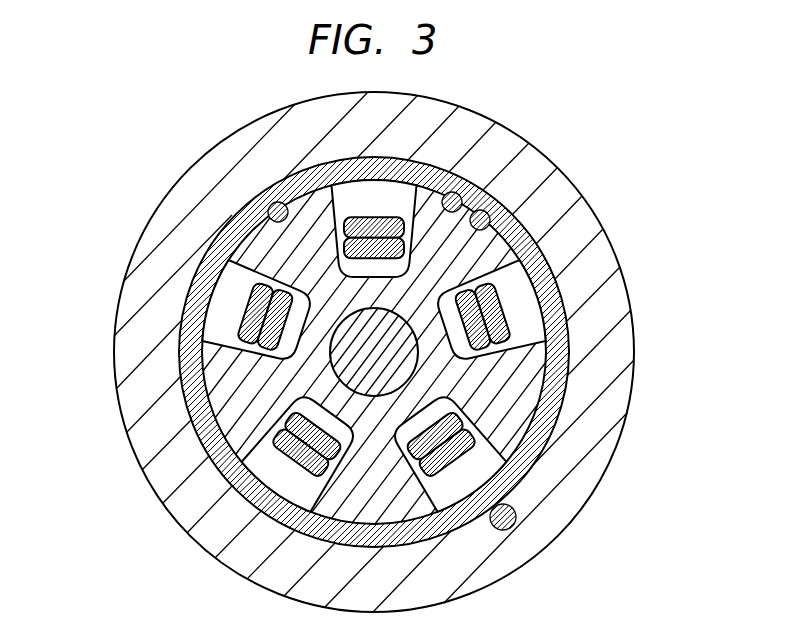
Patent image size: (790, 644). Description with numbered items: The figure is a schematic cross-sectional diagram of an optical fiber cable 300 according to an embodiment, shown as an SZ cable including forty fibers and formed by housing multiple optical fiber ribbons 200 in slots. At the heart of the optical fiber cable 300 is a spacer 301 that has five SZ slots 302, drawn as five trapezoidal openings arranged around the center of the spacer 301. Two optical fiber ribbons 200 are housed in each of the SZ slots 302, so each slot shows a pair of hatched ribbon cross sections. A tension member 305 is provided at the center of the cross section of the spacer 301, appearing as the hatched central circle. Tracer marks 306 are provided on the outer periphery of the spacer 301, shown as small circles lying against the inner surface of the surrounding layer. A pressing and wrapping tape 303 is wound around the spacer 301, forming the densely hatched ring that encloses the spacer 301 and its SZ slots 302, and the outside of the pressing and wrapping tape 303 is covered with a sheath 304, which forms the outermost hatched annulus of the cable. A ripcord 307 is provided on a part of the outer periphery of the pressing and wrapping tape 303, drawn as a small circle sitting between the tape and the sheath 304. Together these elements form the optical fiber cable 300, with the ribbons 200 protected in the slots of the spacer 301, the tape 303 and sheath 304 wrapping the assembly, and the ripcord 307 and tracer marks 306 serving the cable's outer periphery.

The optical fiber cable 300 is at (140, 127).
The optical fiber ribbons 200 is at (497, 282).
The spacer 301 is at (240, 442).
The SZ slots 302 is at (530, 333).
The pressing and wrapping tape 303 is at (253, 498).
The sheath 304 is at (145, 447).
The tension member 305 is at (333, 367).
The tracer marks 306 is at (268, 212).
The ripcord 307 is at (511, 525).